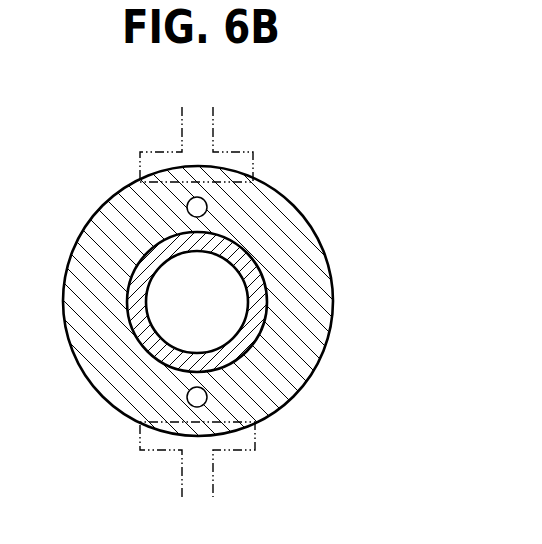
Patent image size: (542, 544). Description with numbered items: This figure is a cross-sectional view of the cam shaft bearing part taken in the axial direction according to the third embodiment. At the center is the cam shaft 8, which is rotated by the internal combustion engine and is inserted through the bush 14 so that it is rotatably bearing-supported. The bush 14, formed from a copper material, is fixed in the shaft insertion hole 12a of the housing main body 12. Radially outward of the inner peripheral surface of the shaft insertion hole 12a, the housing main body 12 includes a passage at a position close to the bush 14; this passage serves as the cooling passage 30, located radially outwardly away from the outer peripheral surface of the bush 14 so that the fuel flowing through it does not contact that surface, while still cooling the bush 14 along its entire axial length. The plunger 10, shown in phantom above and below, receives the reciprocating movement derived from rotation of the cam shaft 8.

The cam shaft 8 is at (162, 311).
The plunger 10 is at (213, 117).
The housing main body 12 is at (285, 380).
The shaft insertion hole 12a is at (263, 347).
The bush 14 is at (263, 284).
The cooling passage 30 is at (207, 208).